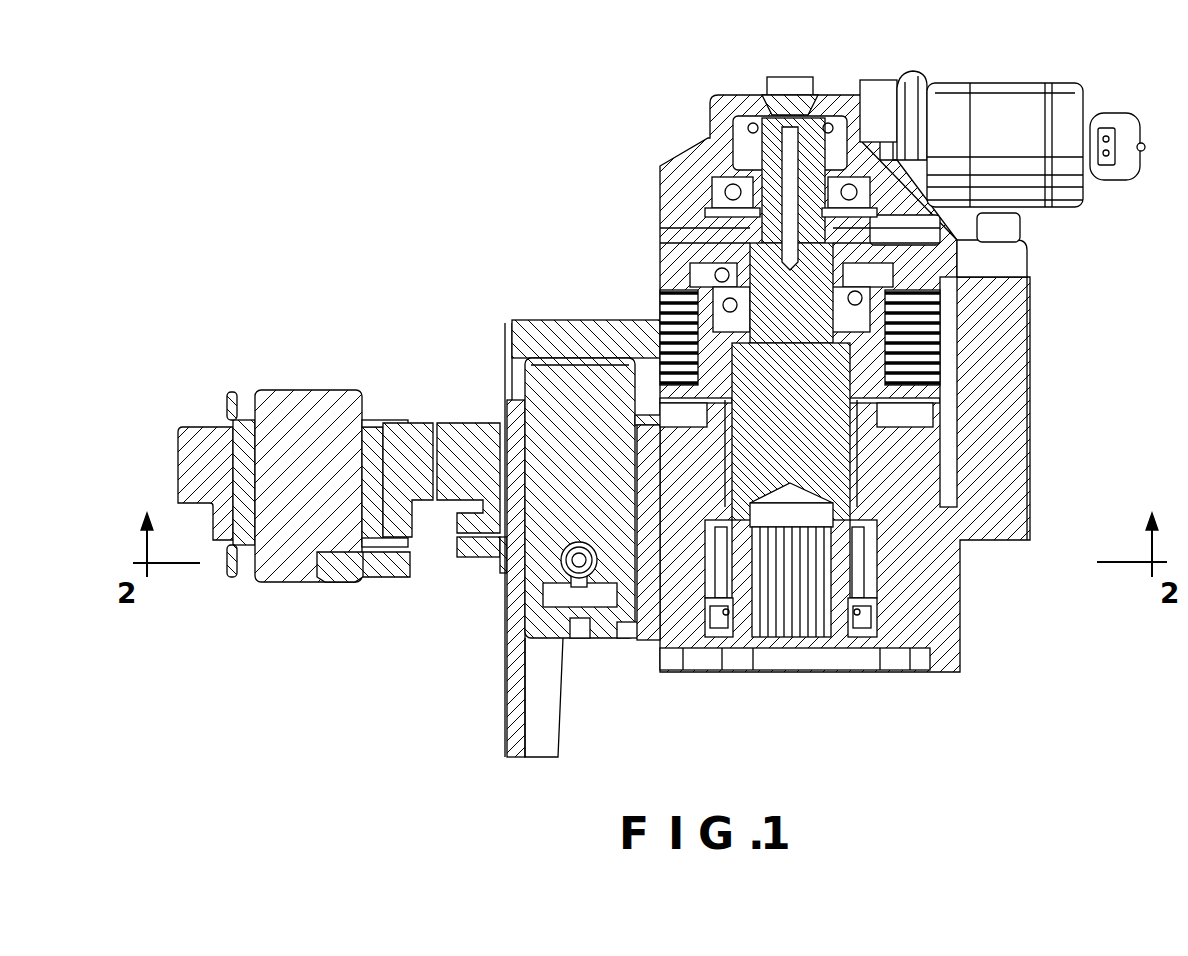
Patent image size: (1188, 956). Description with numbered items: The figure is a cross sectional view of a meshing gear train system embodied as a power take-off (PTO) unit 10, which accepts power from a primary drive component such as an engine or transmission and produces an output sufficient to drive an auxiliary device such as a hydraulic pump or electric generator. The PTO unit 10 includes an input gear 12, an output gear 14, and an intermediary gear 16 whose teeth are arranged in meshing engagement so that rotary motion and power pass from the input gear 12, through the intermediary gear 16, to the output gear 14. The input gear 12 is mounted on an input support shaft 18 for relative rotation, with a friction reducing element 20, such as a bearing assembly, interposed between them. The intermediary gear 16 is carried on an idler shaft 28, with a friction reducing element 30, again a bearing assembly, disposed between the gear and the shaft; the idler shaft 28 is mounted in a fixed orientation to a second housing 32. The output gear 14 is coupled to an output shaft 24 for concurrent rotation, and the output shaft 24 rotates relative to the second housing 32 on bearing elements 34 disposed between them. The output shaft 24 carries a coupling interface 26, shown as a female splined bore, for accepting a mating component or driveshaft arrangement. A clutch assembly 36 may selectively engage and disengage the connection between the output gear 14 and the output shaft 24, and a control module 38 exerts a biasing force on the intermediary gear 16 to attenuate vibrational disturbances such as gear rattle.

The power take-off (PTO) unit 10 is at (631, 388).
The input gear 12 is at (200, 443).
The output gear 14 is at (915, 462).
The intermediary gear 16 is at (460, 490).
The input support shaft 18 is at (305, 400).
The friction reducing element 20 is at (238, 573).
The output shaft 24 is at (812, 138).
The coupling interface 26 is at (790, 627).
The idler shaft 28 is at (548, 383).
The friction reducing element 30 is at (508, 455).
The second housing 32 is at (602, 320).
The bearing elements 34 is at (713, 187).
The clutch assembly 36 is at (952, 331).
The control module 38 is at (552, 566).